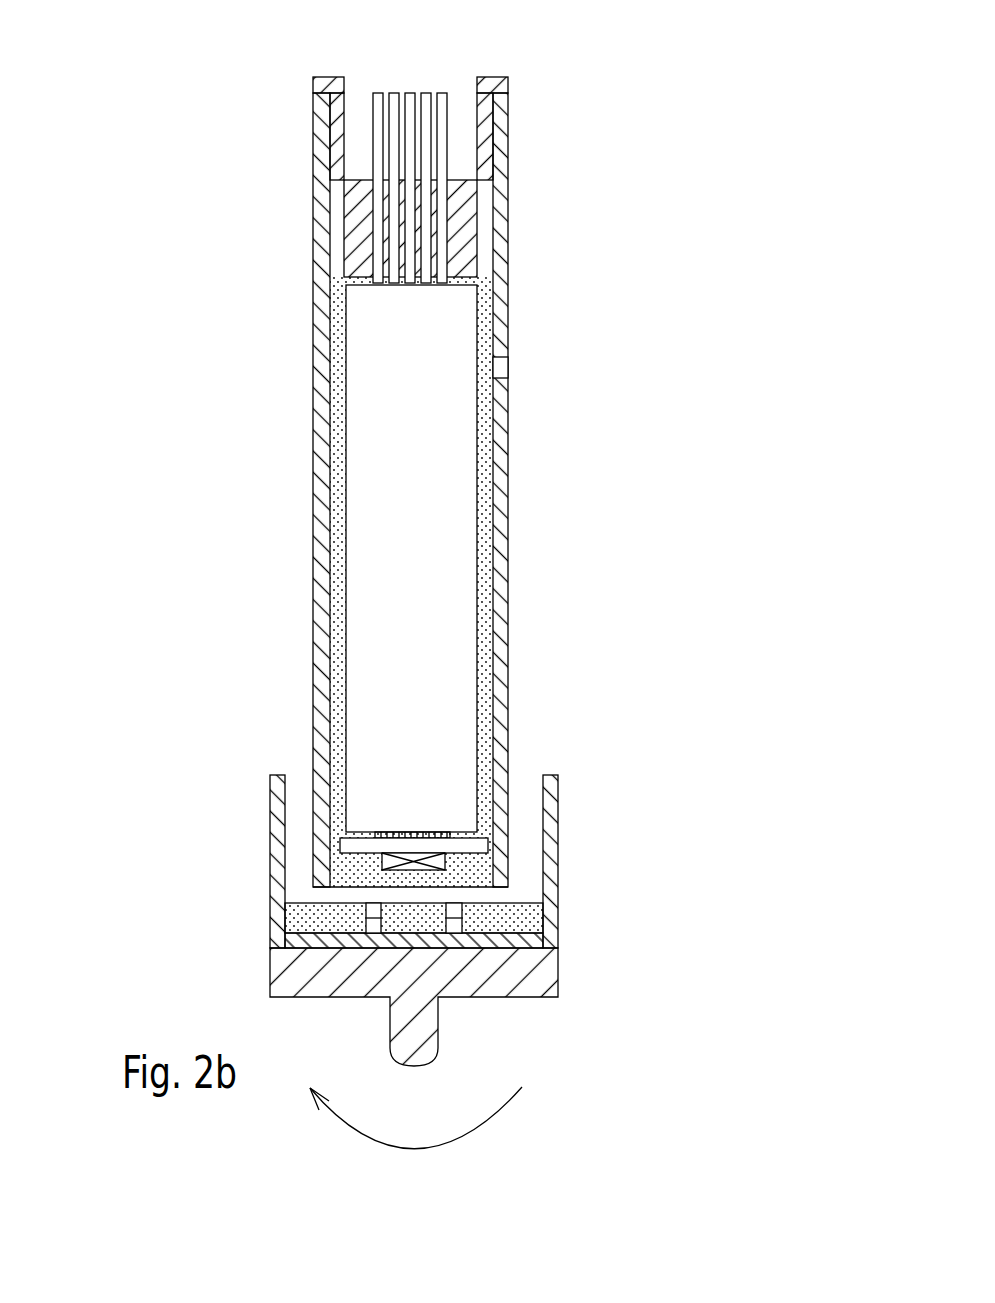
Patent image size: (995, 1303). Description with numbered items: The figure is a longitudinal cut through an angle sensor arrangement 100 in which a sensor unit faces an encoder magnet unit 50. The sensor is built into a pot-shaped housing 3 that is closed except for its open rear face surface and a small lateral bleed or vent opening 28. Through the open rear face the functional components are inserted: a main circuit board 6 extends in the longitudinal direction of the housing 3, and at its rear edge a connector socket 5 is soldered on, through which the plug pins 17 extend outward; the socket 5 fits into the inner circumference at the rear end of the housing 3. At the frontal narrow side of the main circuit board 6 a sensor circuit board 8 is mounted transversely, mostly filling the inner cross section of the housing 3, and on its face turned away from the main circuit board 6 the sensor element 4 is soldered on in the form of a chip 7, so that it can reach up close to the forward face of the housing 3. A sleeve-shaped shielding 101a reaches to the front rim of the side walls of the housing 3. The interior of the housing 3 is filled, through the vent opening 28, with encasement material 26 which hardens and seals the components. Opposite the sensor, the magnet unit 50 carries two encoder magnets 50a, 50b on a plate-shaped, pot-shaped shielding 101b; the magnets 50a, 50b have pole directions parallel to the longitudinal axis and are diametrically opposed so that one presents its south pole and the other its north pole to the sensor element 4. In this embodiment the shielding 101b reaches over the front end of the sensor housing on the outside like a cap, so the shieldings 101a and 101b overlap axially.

The device 100 is at (355, 579).
The housing 3 is at (476, 482).
The sleeve shaped shielding 101a is at (476, 482).
The bleed opening 28 is at (503, 367).
The encasement material 26 is at (487, 490).
The main circuit board 6 is at (378, 350).
The connector socket 5 is at (350, 218).
The plug pins 17 is at (443, 140).
The sensor circuit board 8 is at (467, 847).
The sensor element 4 is at (308, 829).
The chip 7 is at (385, 863).
The magnet unit 50 is at (405, 920).
The pot shaped shielding 101b is at (273, 945).
The magnet 50a is at (460, 907).
The magnet 50b is at (370, 903).